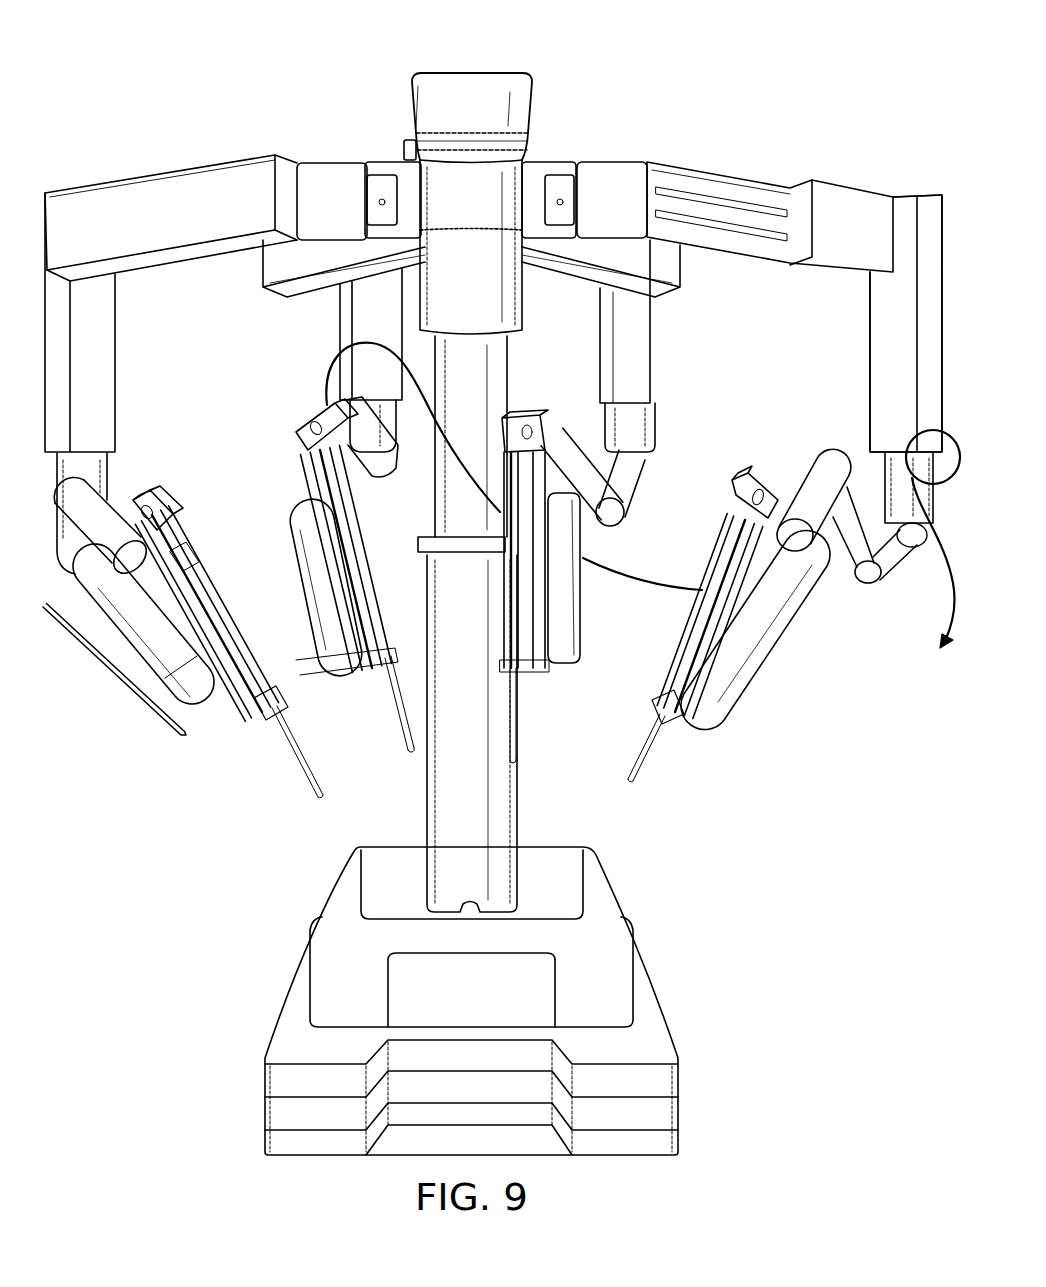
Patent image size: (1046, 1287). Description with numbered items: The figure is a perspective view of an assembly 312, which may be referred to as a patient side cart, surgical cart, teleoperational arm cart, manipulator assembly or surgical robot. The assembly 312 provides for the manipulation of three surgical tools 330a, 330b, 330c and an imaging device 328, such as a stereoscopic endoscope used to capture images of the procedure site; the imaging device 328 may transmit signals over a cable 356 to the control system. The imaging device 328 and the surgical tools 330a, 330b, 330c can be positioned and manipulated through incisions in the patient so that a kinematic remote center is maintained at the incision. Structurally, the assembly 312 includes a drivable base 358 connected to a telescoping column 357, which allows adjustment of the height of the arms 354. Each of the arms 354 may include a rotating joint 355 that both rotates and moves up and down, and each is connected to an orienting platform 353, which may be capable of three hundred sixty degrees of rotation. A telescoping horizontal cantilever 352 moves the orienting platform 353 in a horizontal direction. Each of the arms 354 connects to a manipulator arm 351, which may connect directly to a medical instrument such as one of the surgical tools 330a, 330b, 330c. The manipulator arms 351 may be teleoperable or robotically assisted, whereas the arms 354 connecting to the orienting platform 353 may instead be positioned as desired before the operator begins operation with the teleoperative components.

The assembly 312 is at (250, 70).
The imaging device 328 is at (320, 410).
The surgical tool 330a is at (223, 604).
The surgical tool 330b is at (520, 710).
The surgical tool 330c is at (673, 648).
The manipulator arm 351 is at (112, 678).
The telescoping horizontal cantilever 352 is at (490, 72).
The orienting platform 353 is at (457, 180).
The arm 354 is at (896, 163).
The rotating joint 355 is at (880, 470).
The cable 356 is at (955, 590).
The telescoping column 357 is at (430, 796).
The drivable base 358 is at (657, 1040).